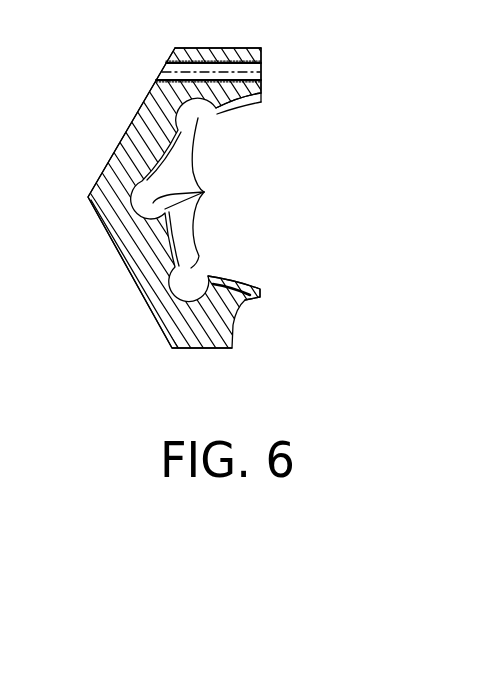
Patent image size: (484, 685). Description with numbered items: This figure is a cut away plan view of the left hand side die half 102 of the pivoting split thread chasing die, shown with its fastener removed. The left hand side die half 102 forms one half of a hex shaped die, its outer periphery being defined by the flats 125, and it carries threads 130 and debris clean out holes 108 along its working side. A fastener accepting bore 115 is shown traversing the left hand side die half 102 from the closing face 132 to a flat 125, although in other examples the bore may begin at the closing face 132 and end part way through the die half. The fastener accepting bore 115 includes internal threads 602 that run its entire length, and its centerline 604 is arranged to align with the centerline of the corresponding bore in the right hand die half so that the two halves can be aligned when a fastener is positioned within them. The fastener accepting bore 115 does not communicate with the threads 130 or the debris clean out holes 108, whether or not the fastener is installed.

The left hand side die half 102 is at (118, 143).
The debris clean out holes 108 is at (204, 192).
The fastener accepting bore 115 is at (263, 66).
The flats 125 is at (198, 48).
The threads 130 is at (250, 107).
The closing face 132 is at (262, 52).
The internal threads 602 is at (160, 78).
The centerline 604 is at (263, 81).